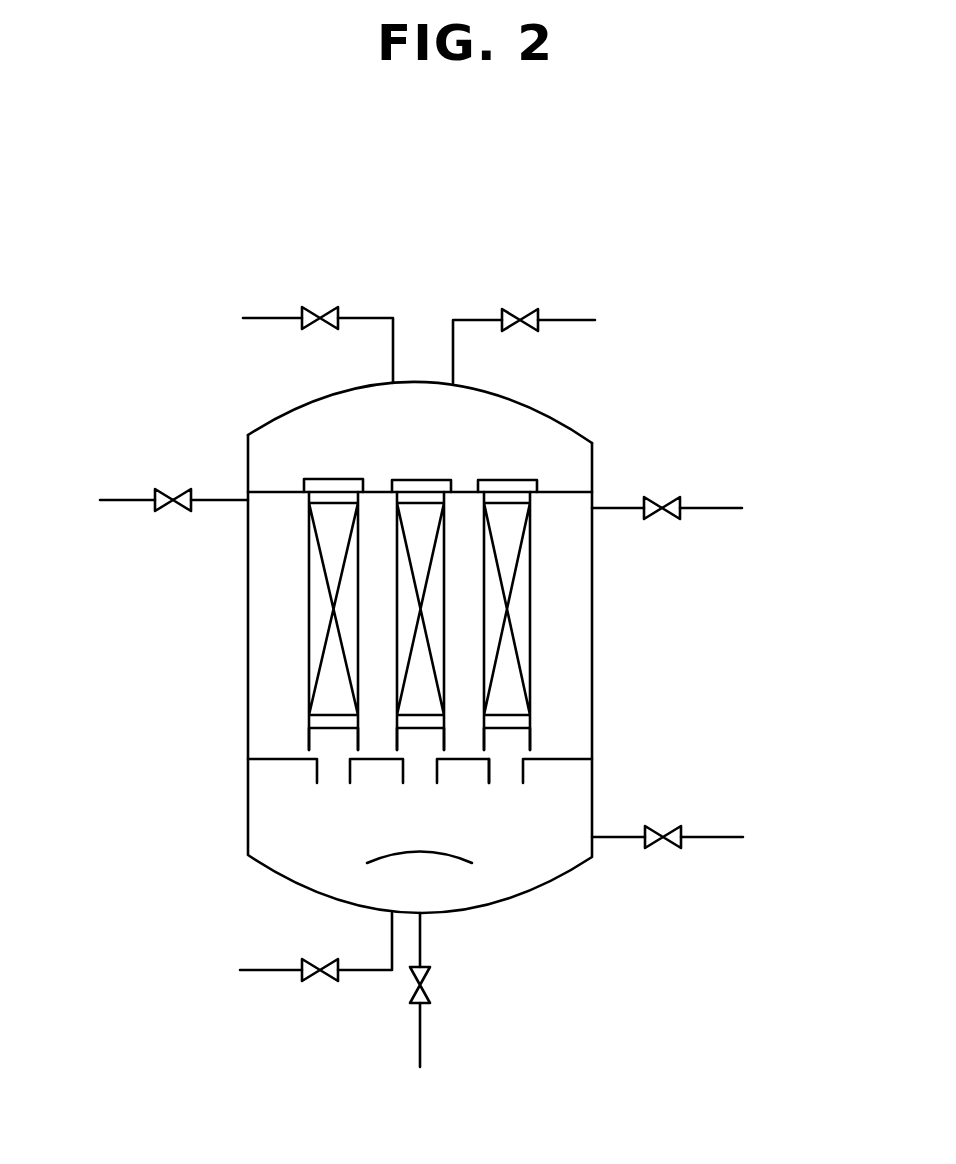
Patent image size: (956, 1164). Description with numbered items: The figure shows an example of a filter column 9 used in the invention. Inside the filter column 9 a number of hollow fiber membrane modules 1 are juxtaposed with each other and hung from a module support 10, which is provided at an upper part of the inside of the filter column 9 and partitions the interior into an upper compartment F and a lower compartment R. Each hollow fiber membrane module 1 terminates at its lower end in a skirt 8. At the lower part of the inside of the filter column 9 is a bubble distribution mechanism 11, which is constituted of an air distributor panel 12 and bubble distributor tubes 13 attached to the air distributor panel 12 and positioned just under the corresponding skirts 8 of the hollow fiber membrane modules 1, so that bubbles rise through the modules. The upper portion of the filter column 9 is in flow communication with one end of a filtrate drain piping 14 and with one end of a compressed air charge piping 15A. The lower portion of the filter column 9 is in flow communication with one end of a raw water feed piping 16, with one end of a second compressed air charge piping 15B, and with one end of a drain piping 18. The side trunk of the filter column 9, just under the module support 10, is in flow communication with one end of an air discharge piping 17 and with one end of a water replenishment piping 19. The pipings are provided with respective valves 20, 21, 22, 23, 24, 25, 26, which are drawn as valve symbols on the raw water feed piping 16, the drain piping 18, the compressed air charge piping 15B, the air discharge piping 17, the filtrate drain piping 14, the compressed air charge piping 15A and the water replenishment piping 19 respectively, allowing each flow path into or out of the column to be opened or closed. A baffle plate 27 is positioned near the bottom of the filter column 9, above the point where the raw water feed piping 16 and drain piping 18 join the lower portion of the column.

The hollow fiber membrane module 1 is at (532, 637).
The skirt 8 is at (532, 742).
The filter column 9 is at (592, 703).
The module support 10 is at (558, 490).
The bubble distribution mechanism 11 is at (272, 752).
The air distributor panel 12 is at (563, 760).
The bubble distributor tube 13 is at (490, 777).
The filtrate drain piping 14 is at (373, 318).
The compressed air charge piping 15A is at (583, 325).
The compressed air charge piping 15B is at (717, 840).
The raw water feed piping 16 is at (263, 968).
The air discharge piping 17 is at (625, 510).
The drain piping 18 is at (423, 940).
The water replenishment piping 19 is at (132, 500).
The valve 20 is at (318, 983).
The valve 21 is at (425, 997).
The valve 22 is at (668, 827).
The valve 23 is at (657, 500).
The valve 24 is at (304, 325).
The valve 25 is at (514, 309).
The valve 26 is at (162, 510).
The baffle plate 27 is at (377, 857).
The lower compartment R is at (275, 628).
The upper compartment F is at (515, 425).